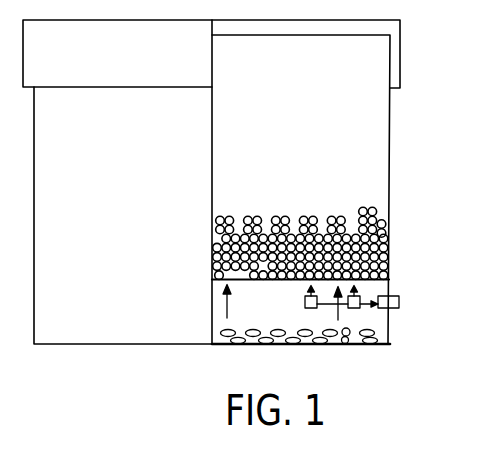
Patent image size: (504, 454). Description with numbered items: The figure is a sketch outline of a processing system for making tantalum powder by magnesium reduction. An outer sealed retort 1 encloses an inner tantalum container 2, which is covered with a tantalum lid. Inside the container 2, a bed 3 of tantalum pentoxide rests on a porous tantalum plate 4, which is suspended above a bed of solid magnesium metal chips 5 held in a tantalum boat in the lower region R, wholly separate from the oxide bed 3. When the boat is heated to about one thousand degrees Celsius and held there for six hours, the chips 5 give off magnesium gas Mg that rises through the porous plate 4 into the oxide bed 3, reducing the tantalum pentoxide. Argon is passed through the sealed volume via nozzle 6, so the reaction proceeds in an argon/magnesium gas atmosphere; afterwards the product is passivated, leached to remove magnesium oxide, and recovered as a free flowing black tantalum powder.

The reaction vessel (retort) with lid 1 is at (397, 42).
The inner reaction container 2 is at (363, 110).
The bed 3 is at (388, 253).
The porous tantalum plate 4 is at (388, 272).
The magnesium metal chips 5 is at (388, 336).
The nozzle 6 is at (353, 309).
The magnesium reservoir region R is at (346, 344).
The magnesium gas flow Mg is at (282, 303).